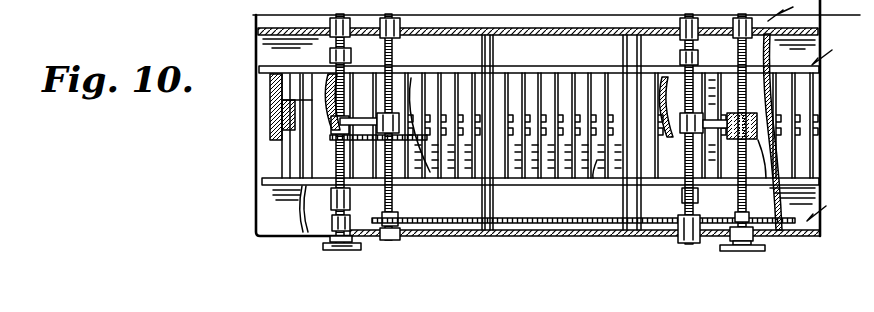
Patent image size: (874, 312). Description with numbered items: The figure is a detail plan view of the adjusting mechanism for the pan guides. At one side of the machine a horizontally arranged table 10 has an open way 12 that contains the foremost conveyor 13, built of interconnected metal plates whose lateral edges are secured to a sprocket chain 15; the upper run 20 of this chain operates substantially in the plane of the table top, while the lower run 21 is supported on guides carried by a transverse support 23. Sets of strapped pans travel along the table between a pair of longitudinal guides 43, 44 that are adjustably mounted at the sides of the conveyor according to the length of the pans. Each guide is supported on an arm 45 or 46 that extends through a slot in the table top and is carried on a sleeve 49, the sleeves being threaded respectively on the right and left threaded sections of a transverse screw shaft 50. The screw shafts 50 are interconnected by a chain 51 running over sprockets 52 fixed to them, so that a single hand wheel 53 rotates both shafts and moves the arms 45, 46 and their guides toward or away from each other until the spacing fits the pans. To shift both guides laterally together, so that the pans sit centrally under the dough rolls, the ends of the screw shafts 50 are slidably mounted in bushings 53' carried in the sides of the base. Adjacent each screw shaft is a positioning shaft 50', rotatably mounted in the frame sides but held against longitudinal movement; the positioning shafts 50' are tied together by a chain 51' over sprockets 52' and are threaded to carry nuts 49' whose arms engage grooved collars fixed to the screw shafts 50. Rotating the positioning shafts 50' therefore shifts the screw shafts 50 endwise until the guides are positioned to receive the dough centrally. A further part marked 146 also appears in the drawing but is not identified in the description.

The table 10 is at (260, 213).
The open way 12 is at (312, 108).
The foremost conveyor 13 is at (292, 138).
The sprocket chain 15 is at (596, 162).
The upper run 20 is at (532, 158).
The lower run 21 is at (413, 160).
The transverse support 23 is at (516, 59).
The longitudinal guide 43 is at (262, 60).
The longitudinal guide 44 is at (262, 183).
The arm 45 is at (310, 190).
The arm 46 is at (682, 204).
The sleeve 49 is at (439, 159).
The nut 49' is at (805, 146).
The transverse screw shaft 50 is at (508, 217).
The positioning shaft 50' is at (418, 53).
The chain 51 is at (324, 128).
The chain 51' is at (583, 243).
The sprocket 52 is at (285, 131).
The sprocket 52' is at (773, 141).
The hand wheel 53 is at (294, 255).
The bushing 53' is at (342, 136).
The frame member 146 is at (97, 8).